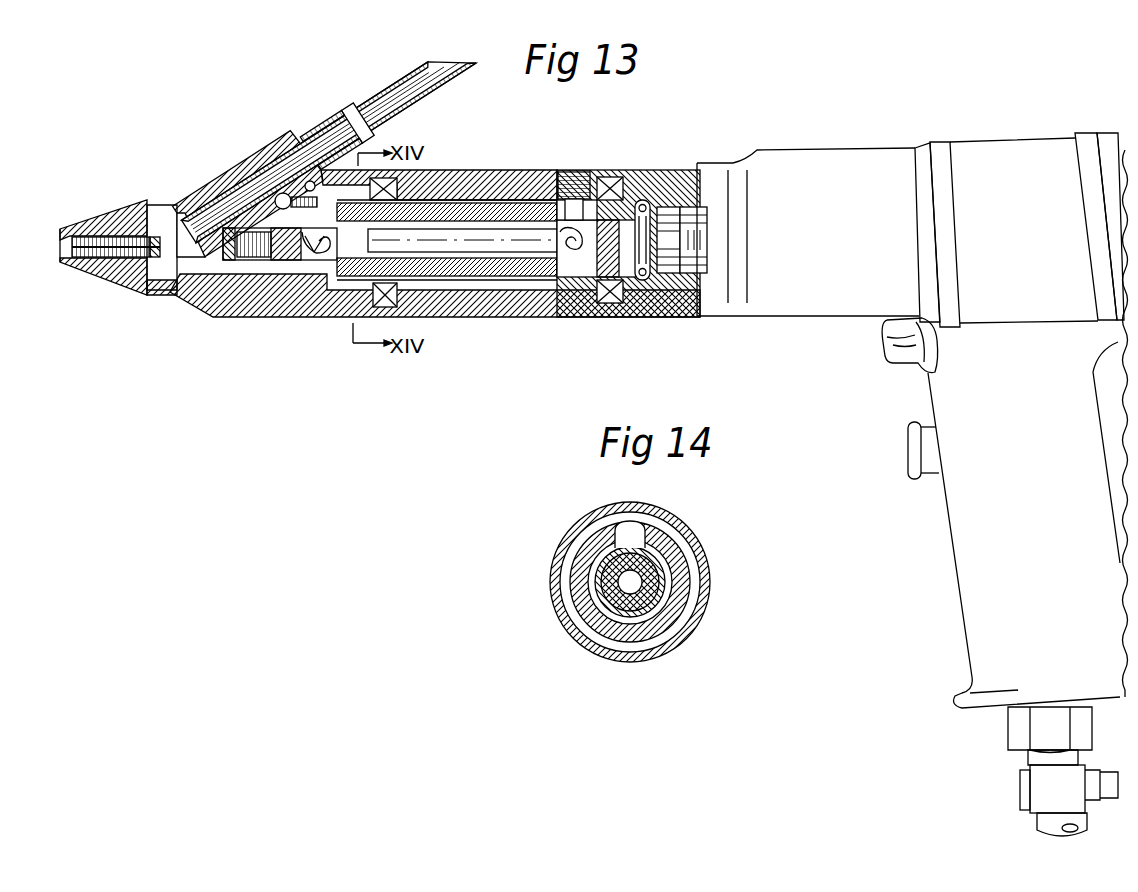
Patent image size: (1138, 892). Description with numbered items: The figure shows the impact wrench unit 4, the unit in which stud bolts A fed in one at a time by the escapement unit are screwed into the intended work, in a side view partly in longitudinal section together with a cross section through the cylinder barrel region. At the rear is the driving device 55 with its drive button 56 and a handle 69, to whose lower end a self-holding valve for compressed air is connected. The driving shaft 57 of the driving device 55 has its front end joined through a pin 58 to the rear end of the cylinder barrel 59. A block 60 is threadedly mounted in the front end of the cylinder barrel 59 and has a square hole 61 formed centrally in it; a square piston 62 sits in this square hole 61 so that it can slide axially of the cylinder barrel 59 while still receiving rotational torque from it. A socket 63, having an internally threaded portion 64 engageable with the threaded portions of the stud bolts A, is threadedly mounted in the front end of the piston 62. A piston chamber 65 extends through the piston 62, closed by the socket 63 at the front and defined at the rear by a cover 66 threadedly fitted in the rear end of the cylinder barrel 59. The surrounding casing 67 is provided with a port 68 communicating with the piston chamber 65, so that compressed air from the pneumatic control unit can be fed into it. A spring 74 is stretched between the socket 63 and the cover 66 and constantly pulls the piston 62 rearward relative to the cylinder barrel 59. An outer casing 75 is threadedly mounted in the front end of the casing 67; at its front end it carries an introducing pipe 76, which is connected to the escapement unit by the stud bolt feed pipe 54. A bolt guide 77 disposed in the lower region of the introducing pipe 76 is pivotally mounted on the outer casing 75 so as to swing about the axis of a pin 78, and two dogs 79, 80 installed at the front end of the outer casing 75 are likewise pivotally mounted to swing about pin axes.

In FIG. 13, the impact wrench unit 4 is at (923, 449).
In FIG. 13, the stud bolt A is at (98, 247).
In FIG. 13, the stud bolt feed pipe 54 is at (395, 103).
In FIG. 13, the driving device 55 is at (834, 153).
In FIG. 13, the drive button 56 is at (906, 448).
In FIG. 13, the driving shaft 57 is at (692, 280).
In FIG. 13, the pin 58 is at (644, 227).
In FIG. 13, the cylinder barrel 59 is at (601, 218).
In FIG. 14, the cylinder barrel 59 is at (665, 566).
In FIG. 13, the block 60 is at (395, 210).
In FIG. 14, the block 60 is at (590, 560).
In FIG. 13, the square hole 61 is at (322, 283).
In FIG. 14, the square hole 61 is at (600, 575).
In FIG. 13, the square piston 62 is at (475, 257).
In FIG. 14, the square piston 62 is at (600, 592).
In FIG. 13, the socket 63 is at (222, 263).
In FIG. 13, the internally threaded portion 64 is at (238, 232).
In FIG. 13, the piston chamber 65 is at (477, 237).
In FIG. 13, the cover 66 is at (608, 257).
In FIG. 13, the casing 67 is at (537, 173).
In FIG. 14, the casing 67 is at (695, 600).
In FIG. 13, the port 68 is at (580, 172).
In FIG. 13, the handle 69 is at (962, 498).
In FIG. 13, the spring 74 is at (573, 253).
In FIG. 13, the outer casing 75 is at (233, 307).
In FIG. 14, the outer casing 75 is at (690, 578).
In FIG. 13, the introducing pipe 76 is at (315, 130).
In FIG. 13, the bolt guide 77 is at (193, 230).
In FIG. 13, the pin 78 is at (281, 192).
In FIG. 13, the dog 79 is at (127, 217).
In FIG. 13, the dog 80 is at (130, 283).